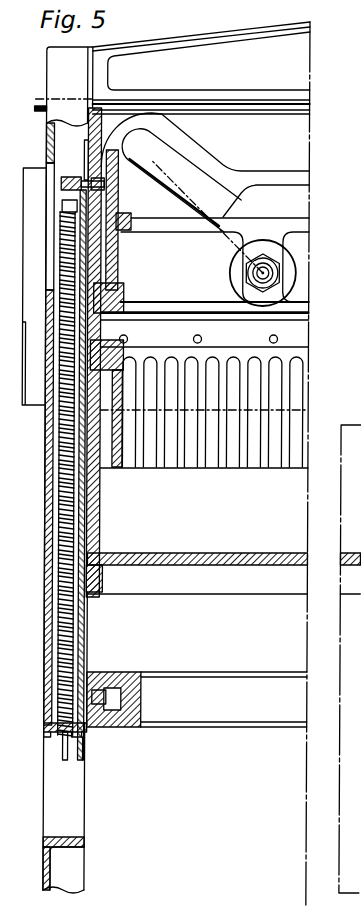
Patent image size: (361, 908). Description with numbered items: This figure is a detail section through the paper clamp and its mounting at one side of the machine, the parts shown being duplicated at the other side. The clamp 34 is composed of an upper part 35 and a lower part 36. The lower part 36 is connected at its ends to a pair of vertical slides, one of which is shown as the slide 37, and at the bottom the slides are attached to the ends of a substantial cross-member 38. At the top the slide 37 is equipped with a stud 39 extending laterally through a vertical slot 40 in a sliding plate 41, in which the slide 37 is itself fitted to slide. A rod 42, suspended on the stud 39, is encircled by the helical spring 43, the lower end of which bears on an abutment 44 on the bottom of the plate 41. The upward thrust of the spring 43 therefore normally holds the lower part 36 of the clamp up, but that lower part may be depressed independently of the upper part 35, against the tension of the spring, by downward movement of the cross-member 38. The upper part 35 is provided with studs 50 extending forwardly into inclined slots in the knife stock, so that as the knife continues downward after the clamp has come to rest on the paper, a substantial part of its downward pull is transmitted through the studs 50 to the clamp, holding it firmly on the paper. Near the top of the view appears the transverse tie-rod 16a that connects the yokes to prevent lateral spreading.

The transverse tie-rod 16a is at (240, 111).
The clamp 34 is at (300, 356).
The upper part 35 is at (308, 229).
The lower part 36 is at (299, 402).
The vertical slide 37 is at (101, 263).
The cross-member 38 is at (197, 640).
The stud 39 is at (63, 182).
The vertical slot 40 is at (84, 143).
The sliding plate 41 is at (116, 302).
The rod 42 is at (73, 275).
The helical spring 43 is at (92, 327).
The abutment 44 is at (85, 762).
The stud 50 is at (272, 283).